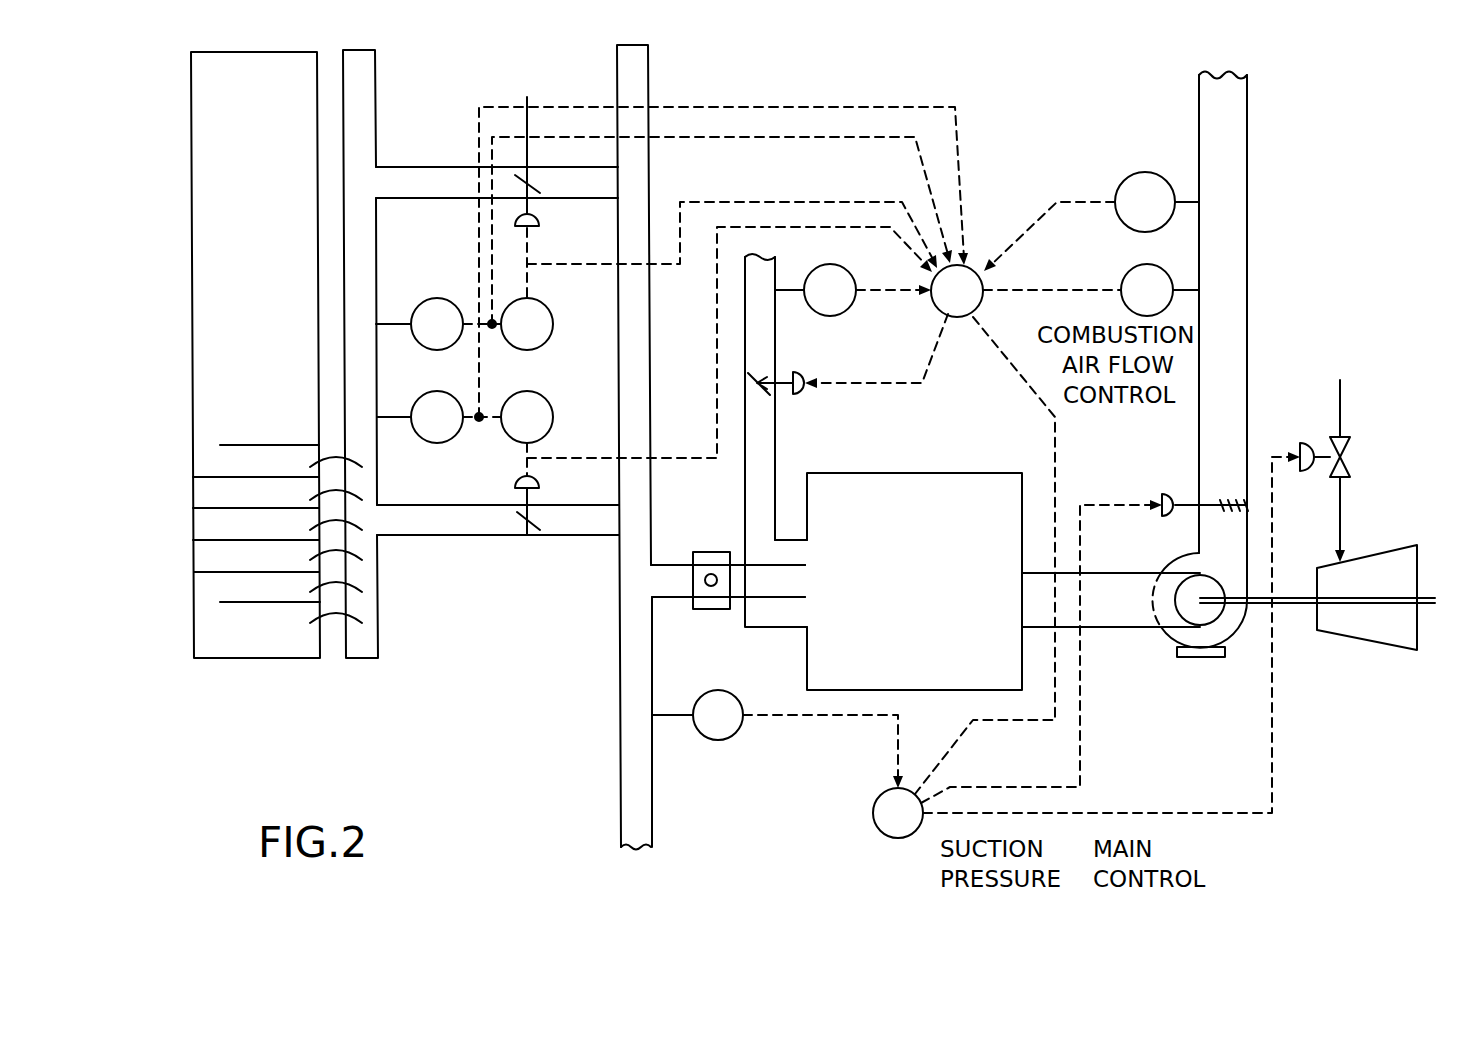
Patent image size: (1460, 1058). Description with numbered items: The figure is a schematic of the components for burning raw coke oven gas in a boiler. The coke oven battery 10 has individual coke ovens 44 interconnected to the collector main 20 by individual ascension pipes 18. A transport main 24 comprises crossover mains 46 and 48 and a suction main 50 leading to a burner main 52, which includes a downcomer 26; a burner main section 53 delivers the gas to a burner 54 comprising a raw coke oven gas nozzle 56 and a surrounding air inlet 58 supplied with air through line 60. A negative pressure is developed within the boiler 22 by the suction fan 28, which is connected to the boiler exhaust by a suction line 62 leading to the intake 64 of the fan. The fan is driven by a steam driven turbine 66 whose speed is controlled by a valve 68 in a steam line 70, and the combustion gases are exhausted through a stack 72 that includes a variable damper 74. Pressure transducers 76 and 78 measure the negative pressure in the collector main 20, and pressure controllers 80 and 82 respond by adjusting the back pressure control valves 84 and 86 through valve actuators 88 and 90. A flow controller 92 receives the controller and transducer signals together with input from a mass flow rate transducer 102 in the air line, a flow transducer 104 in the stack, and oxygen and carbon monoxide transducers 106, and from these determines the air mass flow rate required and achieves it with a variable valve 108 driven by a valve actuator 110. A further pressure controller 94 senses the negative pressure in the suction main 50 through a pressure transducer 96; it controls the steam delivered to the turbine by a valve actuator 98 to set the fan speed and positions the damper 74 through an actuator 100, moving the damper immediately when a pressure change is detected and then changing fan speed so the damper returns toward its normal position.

The coke oven battery 10 is at (277, 678).
The ascension pipes 18 is at (352, 513).
The collector main 20 is at (370, 597).
The boiler 22 is at (910, 481).
The transport main 24 is at (448, 153).
The downcomer 26 is at (702, 611).
The suction fan 28 is at (1256, 633).
The coke ovens 44 is at (263, 457).
The crossover main 46 is at (584, 523).
The crossover main 48 is at (562, 177).
The suction main 50 is at (620, 699).
The burner main 52 is at (660, 564).
The burner main section 53 is at (737, 561).
The burner 54 is at (794, 520).
The raw coke oven gas nozzle 56 is at (800, 570).
The air inlet 58 is at (800, 611).
The air line 60 is at (770, 425).
The suction line 62 is at (1095, 573).
The intake 64 is at (1225, 580).
The steam driven turbine 66 is at (1370, 556).
The valve 68 is at (1352, 457).
The steam line 70 is at (1342, 414).
The stack 72 is at (1237, 268).
The variable damper 74 is at (1210, 500).
The pressure transducer 76 is at (440, 298).
The pressure transducer 78 is at (437, 391).
The pressure controller 80 is at (548, 306).
The pressure controller 82 is at (528, 391).
The back pressure control valve 84 is at (522, 172).
The back pressure control valve 86 is at (527, 536).
The valve actuator 88 is at (540, 232).
The valve actuator 90 is at (545, 480).
The flow controller 92 is at (970, 268).
The pressure controller 94 is at (873, 815).
The pressure transducer 96 is at (725, 740).
The valve actuator 98 is at (1305, 444).
The actuator 100 is at (1165, 497).
The mass flow rate transducer 102 is at (845, 313).
The flow transducer 104 is at (1125, 276).
The oxygen and carbon monoxide transducers 106 is at (1140, 172).
The variable valve 108 is at (770, 378).
The valve actuator 110 is at (806, 375).